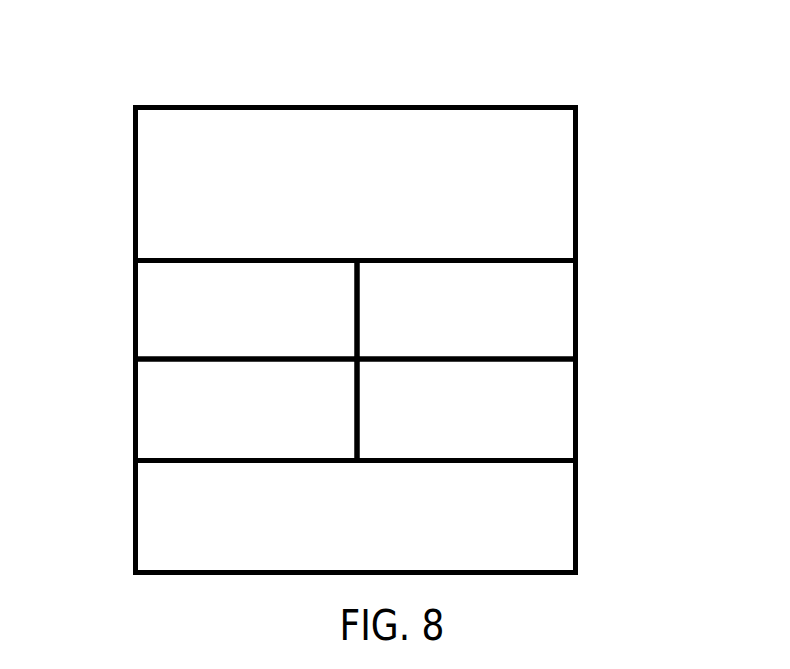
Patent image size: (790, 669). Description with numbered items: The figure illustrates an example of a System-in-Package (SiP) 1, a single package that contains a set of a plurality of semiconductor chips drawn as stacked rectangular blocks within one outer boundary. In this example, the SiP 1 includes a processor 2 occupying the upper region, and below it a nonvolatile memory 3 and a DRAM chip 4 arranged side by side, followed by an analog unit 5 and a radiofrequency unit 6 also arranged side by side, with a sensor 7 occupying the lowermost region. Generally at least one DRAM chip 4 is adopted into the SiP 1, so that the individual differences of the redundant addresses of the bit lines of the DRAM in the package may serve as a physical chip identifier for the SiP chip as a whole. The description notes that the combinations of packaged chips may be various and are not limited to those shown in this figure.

The System-in-Package (SiP) 1 is at (600, 106).
The processor 2 is at (555, 220).
The nonvolatile memory 3 is at (158, 332).
The DRAM chip 4 is at (553, 342).
The analog unit 5 is at (158, 442).
The radiofrequency unit 6 is at (552, 440).
The sensor 7 is at (552, 547).